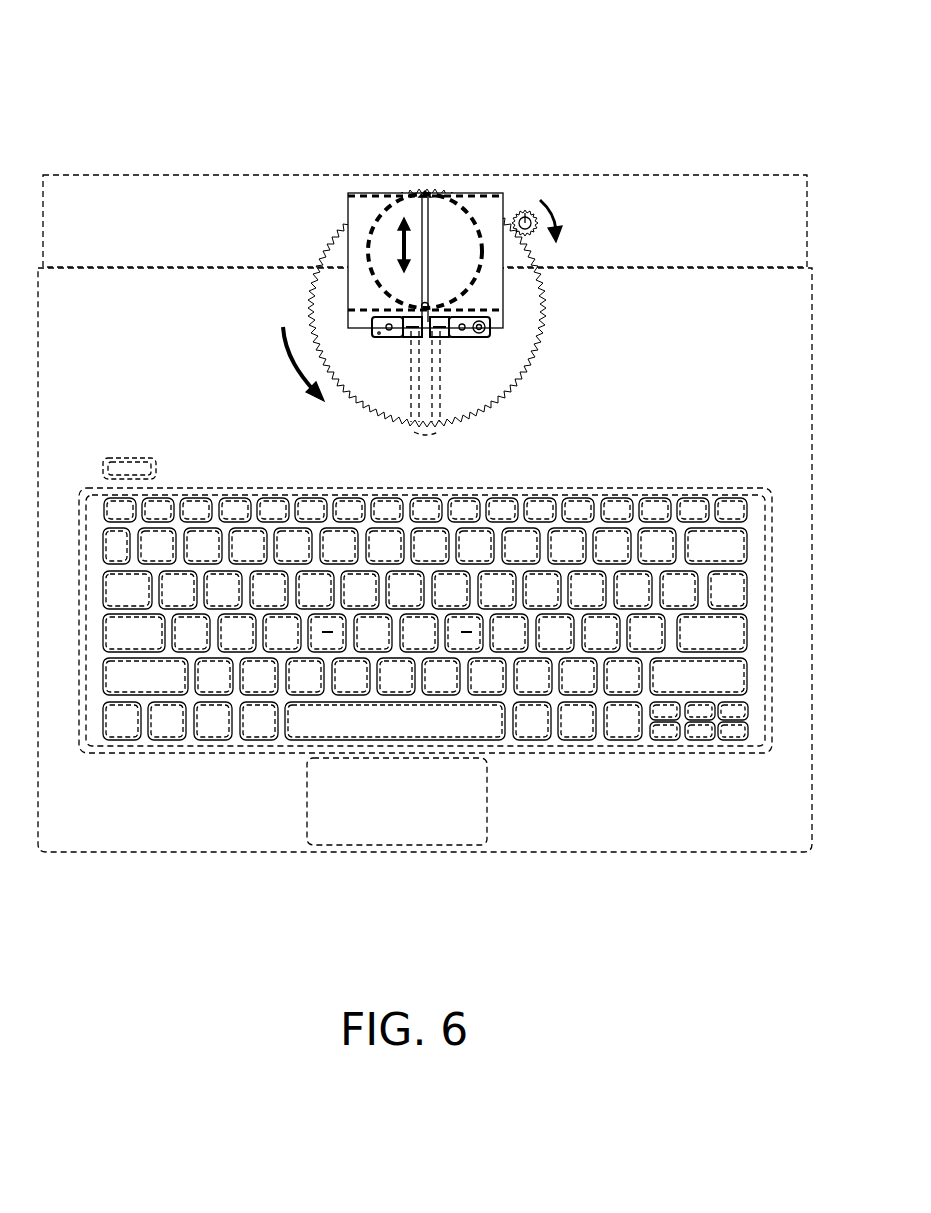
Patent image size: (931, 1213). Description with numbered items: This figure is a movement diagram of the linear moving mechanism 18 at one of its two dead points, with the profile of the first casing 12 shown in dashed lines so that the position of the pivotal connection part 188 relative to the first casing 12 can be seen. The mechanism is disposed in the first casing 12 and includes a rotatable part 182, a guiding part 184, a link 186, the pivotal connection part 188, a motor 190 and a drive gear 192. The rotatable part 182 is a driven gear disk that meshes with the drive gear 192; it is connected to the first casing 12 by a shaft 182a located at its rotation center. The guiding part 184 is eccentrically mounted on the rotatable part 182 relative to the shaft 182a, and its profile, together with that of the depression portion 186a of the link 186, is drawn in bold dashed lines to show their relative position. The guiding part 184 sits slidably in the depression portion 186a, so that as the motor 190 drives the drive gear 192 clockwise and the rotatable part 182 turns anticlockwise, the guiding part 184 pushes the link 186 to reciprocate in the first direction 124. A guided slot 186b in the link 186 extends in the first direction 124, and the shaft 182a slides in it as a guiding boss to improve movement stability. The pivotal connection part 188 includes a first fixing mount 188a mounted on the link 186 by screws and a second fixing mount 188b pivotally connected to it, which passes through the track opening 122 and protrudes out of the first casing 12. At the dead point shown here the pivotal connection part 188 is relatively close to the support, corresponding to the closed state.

The first casing 12 is at (140, 192).
The linear moving mechanism 18 is at (426, 125).
The track opening 122 is at (444, 395).
The first direction 124 is at (388, 245).
The rotatable part 182 is at (508, 343).
The shaft 182a is at (421, 305).
The guiding part 184 is at (355, 255).
The link 186 is at (490, 292).
The depression portion 186a is at (373, 179).
The guided slot 186b is at (424, 218).
The pivotal connection part 188 is at (355, 477).
The first fixing mount 188a is at (424, 337).
The second fixing mount 188b is at (395, 337).
The motor 190 is at (527, 211).
The drive gear 192 is at (527, 236).